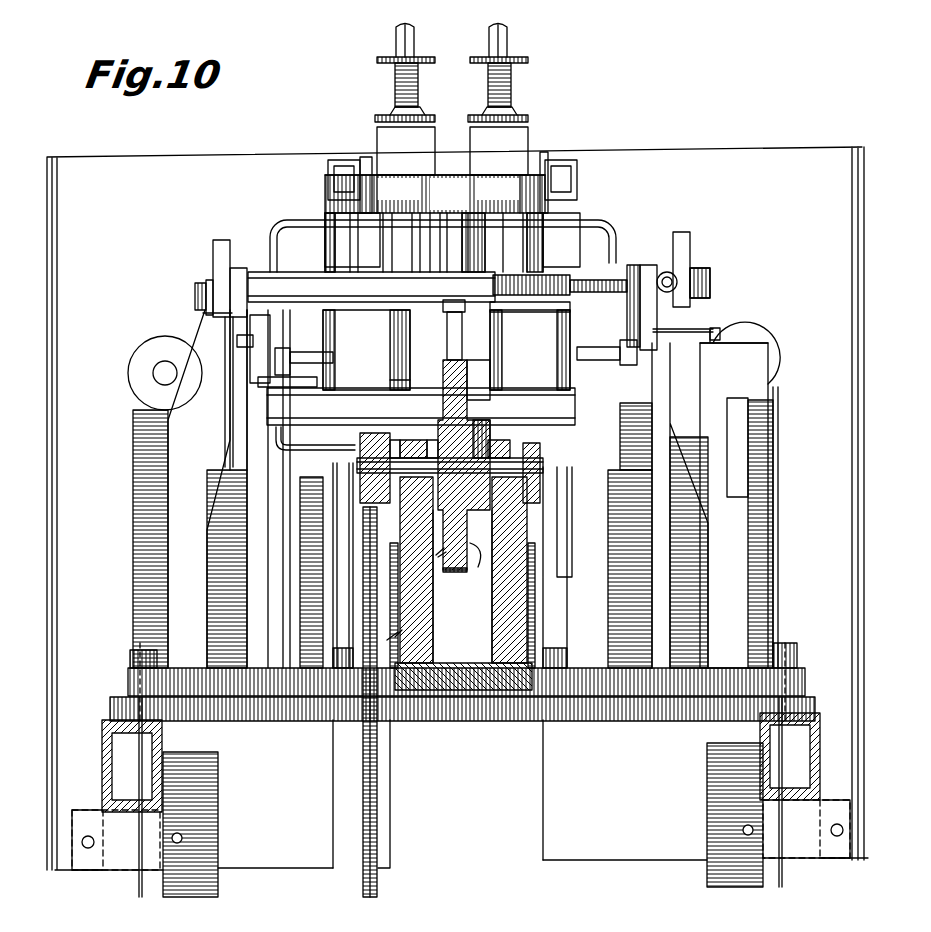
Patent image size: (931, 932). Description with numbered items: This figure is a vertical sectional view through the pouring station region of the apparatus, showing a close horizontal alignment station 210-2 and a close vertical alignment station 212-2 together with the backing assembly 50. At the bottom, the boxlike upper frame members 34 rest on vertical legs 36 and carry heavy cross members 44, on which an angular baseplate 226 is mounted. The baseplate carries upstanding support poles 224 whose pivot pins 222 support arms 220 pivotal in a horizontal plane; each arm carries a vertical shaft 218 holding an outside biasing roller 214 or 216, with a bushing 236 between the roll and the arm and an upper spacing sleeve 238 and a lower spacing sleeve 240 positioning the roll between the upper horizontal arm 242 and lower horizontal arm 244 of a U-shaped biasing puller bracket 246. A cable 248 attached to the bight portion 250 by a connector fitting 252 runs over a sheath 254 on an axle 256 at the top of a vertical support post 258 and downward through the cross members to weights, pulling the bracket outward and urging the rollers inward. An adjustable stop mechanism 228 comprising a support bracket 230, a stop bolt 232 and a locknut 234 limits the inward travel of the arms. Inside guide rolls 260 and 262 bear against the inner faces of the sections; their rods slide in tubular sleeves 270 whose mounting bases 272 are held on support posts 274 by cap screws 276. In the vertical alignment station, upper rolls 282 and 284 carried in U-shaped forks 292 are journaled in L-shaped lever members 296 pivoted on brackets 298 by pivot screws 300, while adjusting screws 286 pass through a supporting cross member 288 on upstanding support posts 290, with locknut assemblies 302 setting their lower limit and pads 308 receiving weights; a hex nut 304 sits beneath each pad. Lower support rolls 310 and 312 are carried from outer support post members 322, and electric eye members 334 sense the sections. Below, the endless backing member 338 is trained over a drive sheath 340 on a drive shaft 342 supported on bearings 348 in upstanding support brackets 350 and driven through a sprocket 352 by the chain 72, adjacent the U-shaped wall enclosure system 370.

The upper frame member 34 is at (102, 765).
The vertical leg 36 is at (218, 888).
The cross member 44 is at (248, 712).
The backing assembly 50 is at (438, 556).
The chain 72 is at (380, 882).
The close horizontal alignment station 210-2 is at (828, 172).
The close vertical alignment station 212-2 is at (683, 24).
The outside biasing roller 214 is at (350, 359).
The outside biasing roller 216 is at (530, 358).
The vertical shaft 218 is at (335, 225).
The support arm 220 is at (560, 276).
The pivot pin 222 is at (645, 270).
The support pole 224 is at (293, 573).
The angular baseplate 226 is at (150, 682).
The adjustable stop mechanism 228 is at (712, 272).
The support bracket 230 is at (760, 340).
The stop bolt 232 is at (692, 276).
The locknut 234 is at (678, 272).
The bushing 236 is at (550, 308).
The upper spacing sleeve 238 is at (383, 245).
The lower spacing sleeve 240 is at (560, 445).
The upper horizontal arm 242 is at (372, 240).
The lower horizontal arm 244 is at (310, 445).
The U-shaped biasing puller bracket 246 is at (281, 216).
The cable 248 is at (136, 884).
The bight portion 250 is at (196, 300).
The connector fitting 252 is at (250, 330).
The sheath 254 is at (138, 376).
The axle 256 is at (162, 367).
The vertical support post 258 is at (153, 538).
The upper inside guide roll 260 is at (447, 320).
The lower inside guide roll 262 is at (462, 312).
The tubular sleeve 270 is at (262, 270).
The mounting base 272 is at (218, 266).
The support post 274 is at (180, 478).
The cap screw 276 is at (204, 284).
The upper roll 282 is at (395, 194).
The upper roll 284 is at (499, 194).
The adjusting screw 286 is at (390, 60).
The supporting cross member 288 is at (620, 164).
The upstanding support post 290 is at (340, 675).
The U-shaped fork 292 is at (430, 215).
The L-shaped lever member 296 is at (362, 160).
The bracket 298 is at (333, 178).
The pivot screw 300 is at (378, 148).
The locknut assembly 302 is at (395, 90).
The nut and flange 304 is at (380, 122).
The pad 308 is at (396, 50).
The lower support roll 310 is at (407, 380).
The lower support roll 312 is at (478, 380).
The outer support post member 322 is at (752, 312).
The electric eye member 334 is at (312, 357).
The endless backing member 338 is at (433, 600).
The drive sheath 340 is at (472, 565).
The drive shaft 342 is at (440, 480).
The bearing 348 is at (410, 440).
The upstanding support bracket 350 is at (498, 633).
The sprocket 352 is at (365, 433).
The U-shaped wall enclosure system 370 is at (392, 650).